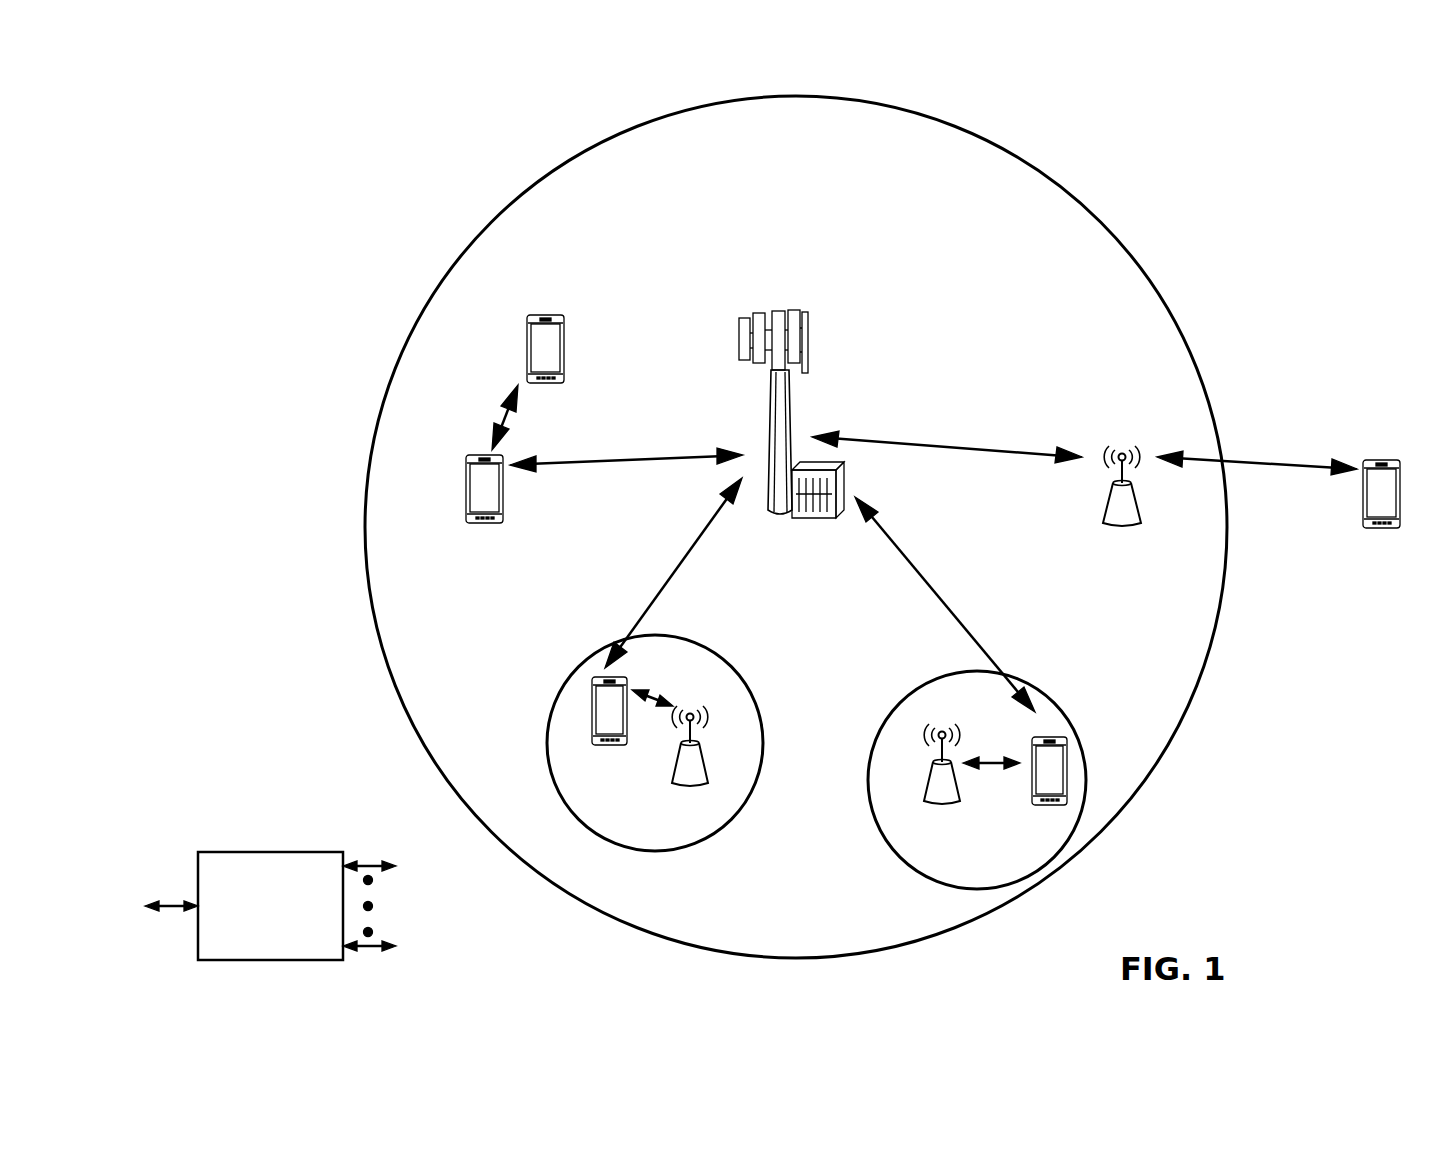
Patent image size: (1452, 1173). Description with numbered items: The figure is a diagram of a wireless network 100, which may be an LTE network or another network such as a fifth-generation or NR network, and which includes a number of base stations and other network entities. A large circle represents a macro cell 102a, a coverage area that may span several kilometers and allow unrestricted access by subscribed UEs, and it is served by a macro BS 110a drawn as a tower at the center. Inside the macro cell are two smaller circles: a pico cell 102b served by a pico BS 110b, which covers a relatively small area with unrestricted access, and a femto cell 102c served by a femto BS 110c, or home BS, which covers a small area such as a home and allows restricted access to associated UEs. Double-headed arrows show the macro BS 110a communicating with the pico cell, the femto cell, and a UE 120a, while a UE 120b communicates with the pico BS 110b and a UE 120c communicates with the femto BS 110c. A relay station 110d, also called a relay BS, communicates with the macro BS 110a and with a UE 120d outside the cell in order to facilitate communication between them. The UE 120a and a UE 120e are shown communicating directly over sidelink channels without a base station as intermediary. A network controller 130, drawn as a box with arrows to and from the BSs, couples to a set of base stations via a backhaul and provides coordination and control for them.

The wireless network 100 is at (250, 89).
The macro cell 102a is at (1084, 203).
The pico cell 102b is at (745, 682).
The femto cell 102c is at (915, 692).
The macro BS 110a is at (783, 300).
The pico BS 110b is at (708, 778).
The femto BS 110c is at (928, 796).
The relay station 110d is at (1122, 445).
The UE 120a is at (466, 484).
The UE 120b is at (598, 746).
The UE 120c is at (1035, 808).
The UE 120d is at (1396, 459).
The UE 120e is at (528, 338).
The network controller 130 is at (268, 852).